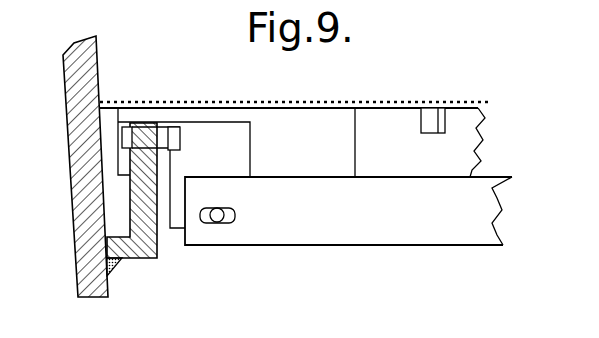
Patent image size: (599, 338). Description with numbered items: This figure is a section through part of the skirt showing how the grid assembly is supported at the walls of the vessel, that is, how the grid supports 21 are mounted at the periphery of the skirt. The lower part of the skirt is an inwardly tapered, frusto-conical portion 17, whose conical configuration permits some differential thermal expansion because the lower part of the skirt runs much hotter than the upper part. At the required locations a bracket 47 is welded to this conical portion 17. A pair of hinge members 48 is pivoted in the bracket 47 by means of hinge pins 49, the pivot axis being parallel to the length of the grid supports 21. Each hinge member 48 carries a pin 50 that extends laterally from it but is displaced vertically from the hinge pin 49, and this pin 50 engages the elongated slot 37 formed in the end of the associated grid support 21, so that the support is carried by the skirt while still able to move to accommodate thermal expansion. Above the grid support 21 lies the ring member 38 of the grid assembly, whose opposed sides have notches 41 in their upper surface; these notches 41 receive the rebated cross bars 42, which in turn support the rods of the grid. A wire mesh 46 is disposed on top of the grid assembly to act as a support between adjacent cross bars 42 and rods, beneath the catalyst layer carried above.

The frusto-conical portion of the skirt 17 is at (88, 188).
The grid support 21 is at (353, 238).
The elongated slot 37 is at (205, 223).
The ring member 38 is at (295, 127).
The notches 41 is at (445, 122).
The cross bars 42 is at (425, 110).
The wire mesh 46 is at (370, 107).
The bracket 47 is at (137, 255).
The hinge member 48 is at (230, 140).
The hinge pin 49 is at (142, 138).
The pin 50 is at (213, 223).